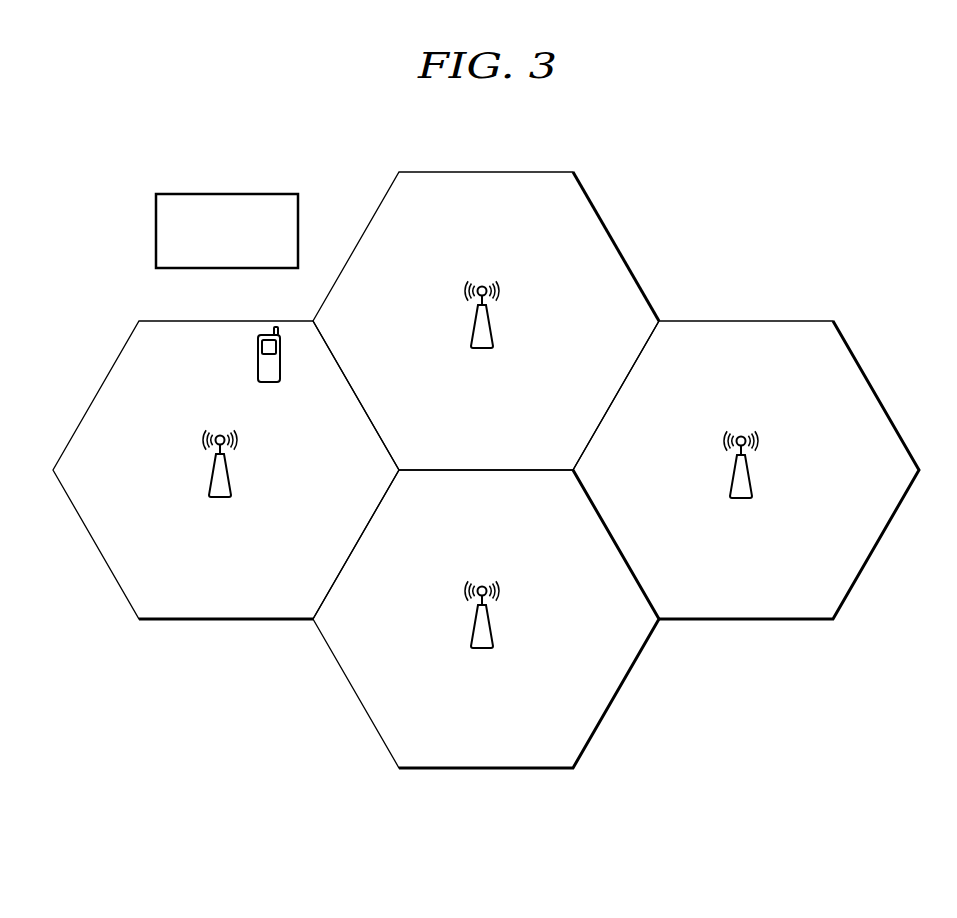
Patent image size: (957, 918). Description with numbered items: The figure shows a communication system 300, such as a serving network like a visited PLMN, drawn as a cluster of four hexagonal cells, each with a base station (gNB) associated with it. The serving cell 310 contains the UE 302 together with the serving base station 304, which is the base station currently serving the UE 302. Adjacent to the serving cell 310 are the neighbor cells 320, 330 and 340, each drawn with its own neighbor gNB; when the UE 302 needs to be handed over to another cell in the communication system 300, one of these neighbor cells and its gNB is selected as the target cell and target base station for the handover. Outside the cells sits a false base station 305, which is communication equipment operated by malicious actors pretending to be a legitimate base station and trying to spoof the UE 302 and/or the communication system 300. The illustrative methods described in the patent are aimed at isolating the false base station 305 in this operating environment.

The communication system 300 is at (731, 196).
The UE 302 is at (258, 352).
The serving base station 304 is at (211, 480).
The false base station 305 is at (156, 229).
The serving cell 310 is at (95, 396).
The neighbor cell 320 is at (487, 172).
The neighbor cell 330 is at (357, 695).
The neighbor cell 340 is at (760, 321).